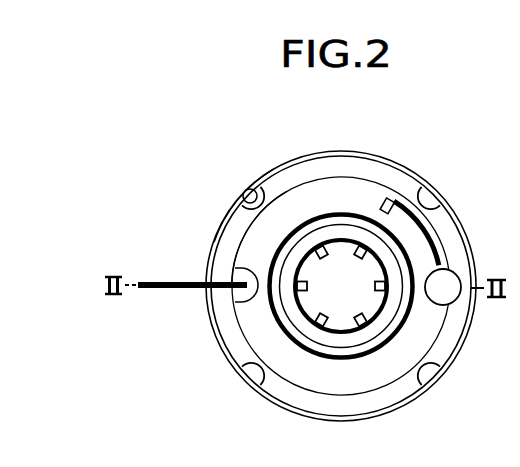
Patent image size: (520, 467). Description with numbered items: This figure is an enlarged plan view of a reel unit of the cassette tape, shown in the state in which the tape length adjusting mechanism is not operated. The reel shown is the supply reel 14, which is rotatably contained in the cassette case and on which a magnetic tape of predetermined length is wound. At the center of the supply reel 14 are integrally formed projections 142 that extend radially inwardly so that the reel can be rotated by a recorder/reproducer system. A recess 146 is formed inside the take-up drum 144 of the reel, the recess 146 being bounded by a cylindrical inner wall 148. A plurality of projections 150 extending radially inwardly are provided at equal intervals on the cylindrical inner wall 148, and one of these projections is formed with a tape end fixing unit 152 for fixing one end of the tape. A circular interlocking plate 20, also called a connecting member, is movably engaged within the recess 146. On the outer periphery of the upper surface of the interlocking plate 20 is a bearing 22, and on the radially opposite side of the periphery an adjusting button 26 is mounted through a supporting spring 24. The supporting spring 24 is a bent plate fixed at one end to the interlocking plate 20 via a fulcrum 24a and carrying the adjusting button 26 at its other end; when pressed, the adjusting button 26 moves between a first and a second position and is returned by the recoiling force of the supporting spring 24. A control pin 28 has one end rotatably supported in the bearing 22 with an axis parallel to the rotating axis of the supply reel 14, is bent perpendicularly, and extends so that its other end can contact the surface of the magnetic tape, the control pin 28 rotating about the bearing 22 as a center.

The supply reel 14 is at (229, 204).
The interlocking plate 20 is at (246, 311).
The bearing 22 is at (243, 271).
The supporting spring 24 is at (432, 250).
The fulcrum 24a is at (400, 198).
The adjusting button 26 is at (449, 283).
The control pin 28 is at (168, 279).
The projections 142 is at (352, 312).
The take-up drum 144 is at (385, 162).
The recess 146 is at (300, 175).
The cylindrical inner wall 148 is at (350, 163).
The projections 150 is at (429, 200).
The tape end fixing unit 152 is at (246, 188).